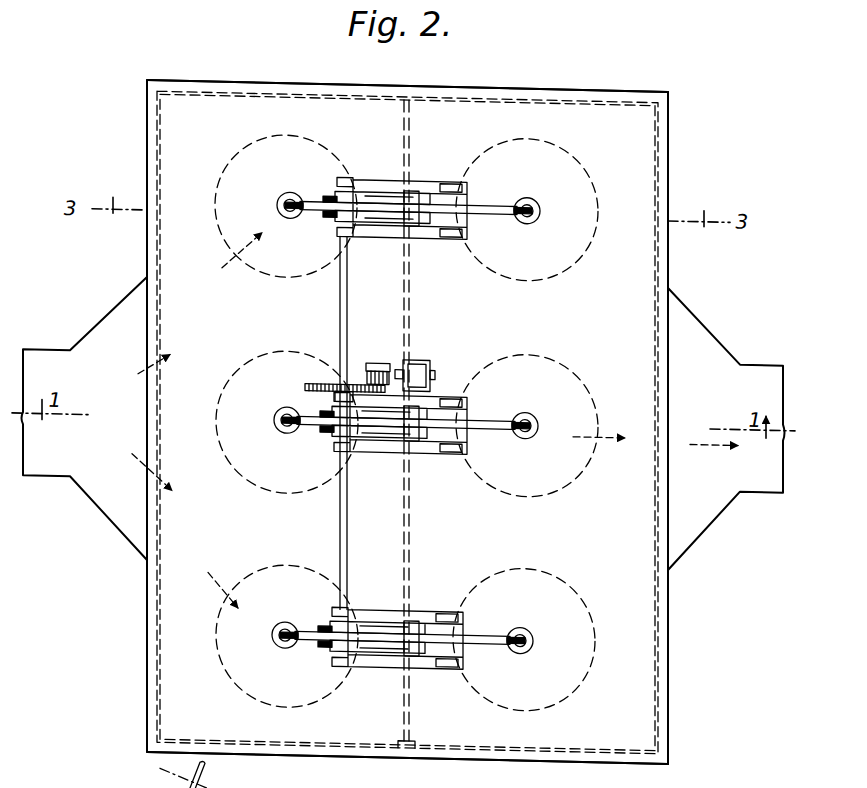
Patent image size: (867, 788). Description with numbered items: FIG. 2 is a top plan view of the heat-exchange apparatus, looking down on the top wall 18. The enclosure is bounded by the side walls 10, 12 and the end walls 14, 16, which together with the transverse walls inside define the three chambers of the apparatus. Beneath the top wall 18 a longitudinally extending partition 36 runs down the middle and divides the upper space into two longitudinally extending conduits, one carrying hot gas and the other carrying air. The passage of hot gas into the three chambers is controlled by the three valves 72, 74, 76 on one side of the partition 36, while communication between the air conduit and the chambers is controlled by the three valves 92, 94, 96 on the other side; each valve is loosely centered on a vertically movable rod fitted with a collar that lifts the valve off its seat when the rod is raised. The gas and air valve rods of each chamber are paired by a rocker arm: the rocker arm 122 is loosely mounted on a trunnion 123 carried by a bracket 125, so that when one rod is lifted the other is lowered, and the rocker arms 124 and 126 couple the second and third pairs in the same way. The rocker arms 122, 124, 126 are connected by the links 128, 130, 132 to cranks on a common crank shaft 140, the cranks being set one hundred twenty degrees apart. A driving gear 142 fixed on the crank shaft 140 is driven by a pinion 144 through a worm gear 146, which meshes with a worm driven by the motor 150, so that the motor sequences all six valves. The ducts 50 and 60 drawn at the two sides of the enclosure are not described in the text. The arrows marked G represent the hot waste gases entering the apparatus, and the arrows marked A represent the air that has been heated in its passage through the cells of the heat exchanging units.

The side wall 10 is at (147, 646).
The side wall 12 is at (672, 628).
The end wall 14 is at (343, 80).
The end wall 16 is at (528, 744).
The top wall 18 is at (407, 422).
The longitudinally extending partition 36 is at (420, 318).
The left duct 50 is at (57, 480).
The right duct 60 is at (762, 474).
The valve 72 is at (234, 158).
The valve 74 is at (217, 428).
The valve 76 is at (217, 652).
The valve 92 is at (597, 208).
The valve 94 is at (598, 411).
The valve 96 is at (596, 638).
The rocker arm 122 is at (495, 197).
The trunnion 123 is at (419, 188).
The rocker arm 124 is at (490, 412).
The bracket 125 is at (437, 229).
The rocker arm 126 is at (490, 627).
The link 128 is at (335, 218).
The link 130 is at (332, 426).
The link 132 is at (332, 641).
The crank shaft 140 is at (339, 296).
The driving gear 142 is at (321, 380).
The pinion 144 is at (388, 365).
The worm gear 146 is at (369, 356).
The motor 150 is at (428, 355).
The arrows representing heated air A is at (655, 455).
The arrows representing hot waste gases G is at (186, 418).